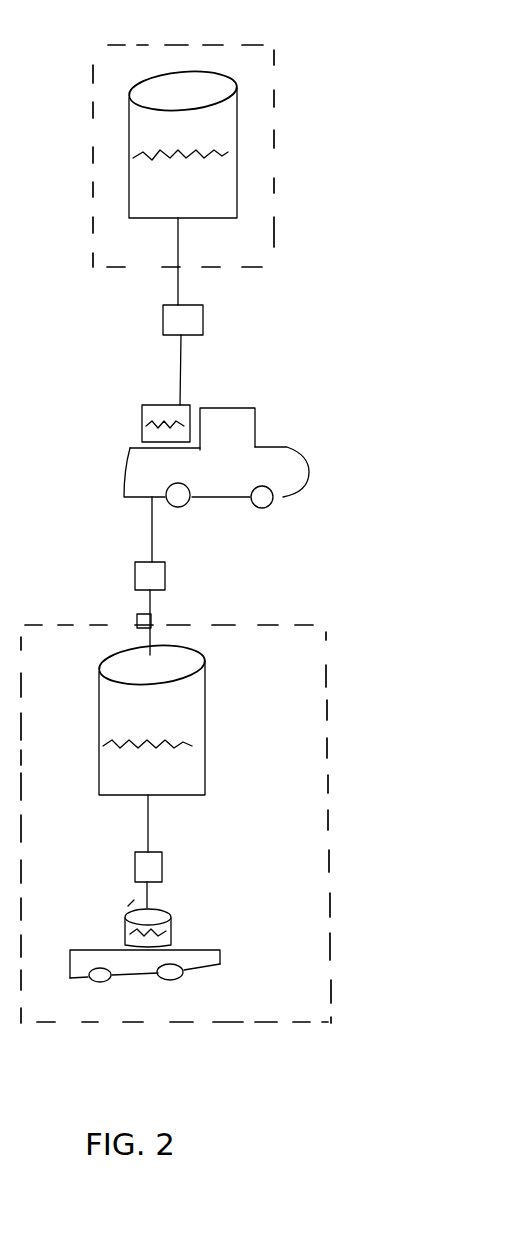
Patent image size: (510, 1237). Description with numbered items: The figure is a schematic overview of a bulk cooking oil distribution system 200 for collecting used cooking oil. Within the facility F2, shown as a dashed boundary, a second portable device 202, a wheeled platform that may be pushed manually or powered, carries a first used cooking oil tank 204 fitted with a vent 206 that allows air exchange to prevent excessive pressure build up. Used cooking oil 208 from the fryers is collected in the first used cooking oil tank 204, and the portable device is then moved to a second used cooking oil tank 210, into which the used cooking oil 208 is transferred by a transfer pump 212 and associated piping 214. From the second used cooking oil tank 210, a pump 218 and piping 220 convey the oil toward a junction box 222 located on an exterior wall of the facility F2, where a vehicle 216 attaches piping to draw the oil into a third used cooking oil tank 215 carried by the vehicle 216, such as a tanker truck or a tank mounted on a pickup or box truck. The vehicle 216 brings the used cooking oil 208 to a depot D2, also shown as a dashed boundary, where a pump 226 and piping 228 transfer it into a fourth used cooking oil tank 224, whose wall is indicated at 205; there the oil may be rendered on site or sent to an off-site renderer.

The bulk cooking oil distribution system 200 is at (319, 42).
The second portable device 202 is at (212, 963).
The first used cooking oil tank 204 is at (168, 910).
The tank wall 205 is at (141, 193).
The vent 206 is at (131, 903).
The used cooking oil 208 is at (142, 436).
The second used cooking oil tank 210 is at (205, 720).
The transfer pump 212 is at (162, 862).
The piping 214 is at (148, 820).
The third used cooking oil tank 215 is at (141, 406).
The vehicle 216 is at (279, 457).
The pump 218 is at (165, 578).
The piping 220 is at (152, 535).
The junction box 222 is at (153, 620).
The fourth used cooking oil tank 224 is at (224, 128).
The pump 226 is at (203, 323).
The piping 228 is at (181, 366).
The depot D2 is at (272, 181).
The facility F2 is at (327, 708).